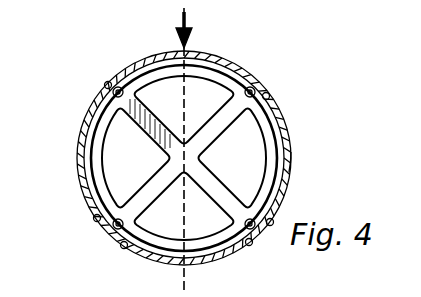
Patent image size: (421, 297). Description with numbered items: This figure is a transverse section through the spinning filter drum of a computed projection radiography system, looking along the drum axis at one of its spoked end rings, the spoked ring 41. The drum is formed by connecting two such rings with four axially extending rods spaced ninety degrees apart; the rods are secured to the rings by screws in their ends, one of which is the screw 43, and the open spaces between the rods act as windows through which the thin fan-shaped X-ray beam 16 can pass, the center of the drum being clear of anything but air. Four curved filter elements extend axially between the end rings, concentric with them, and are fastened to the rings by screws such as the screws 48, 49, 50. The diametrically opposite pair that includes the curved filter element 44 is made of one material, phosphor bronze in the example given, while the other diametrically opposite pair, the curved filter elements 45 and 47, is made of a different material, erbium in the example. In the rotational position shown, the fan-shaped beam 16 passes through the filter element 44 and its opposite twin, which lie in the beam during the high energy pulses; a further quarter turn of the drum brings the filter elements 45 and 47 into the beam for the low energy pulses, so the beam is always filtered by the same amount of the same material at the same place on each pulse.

The fan-shaped X-ray beam boundary 16 is at (176, 21).
The spoked ring 41 is at (264, 120).
The screw 43 is at (110, 232).
The curved filter element 44 is at (222, 60).
The curved filter element 45 is at (291, 163).
The curved filter element 47 is at (80, 141).
The screw 48 is at (106, 224).
The screw 49 is at (105, 90).
The screw 50 is at (128, 248).